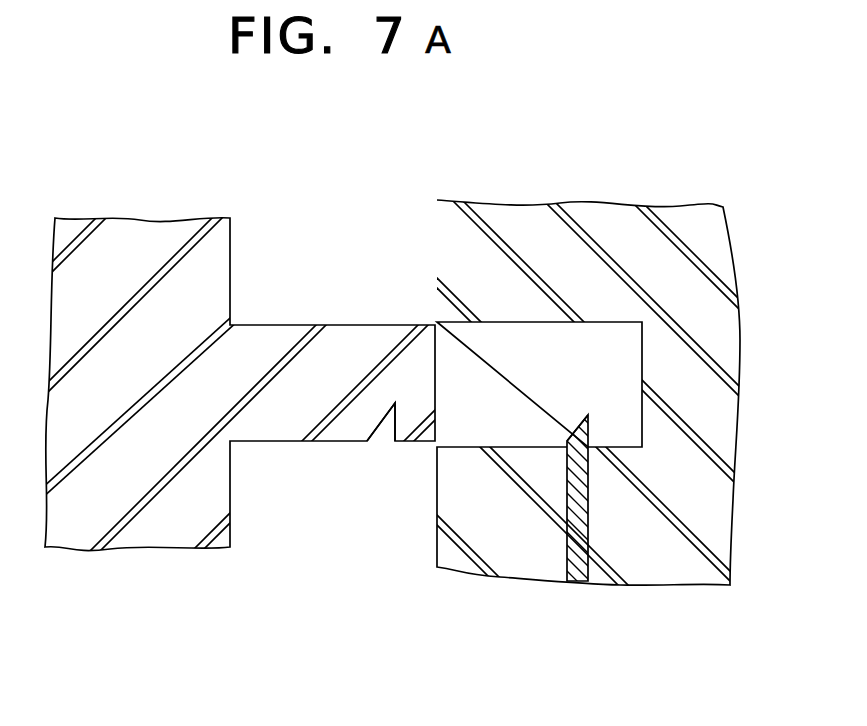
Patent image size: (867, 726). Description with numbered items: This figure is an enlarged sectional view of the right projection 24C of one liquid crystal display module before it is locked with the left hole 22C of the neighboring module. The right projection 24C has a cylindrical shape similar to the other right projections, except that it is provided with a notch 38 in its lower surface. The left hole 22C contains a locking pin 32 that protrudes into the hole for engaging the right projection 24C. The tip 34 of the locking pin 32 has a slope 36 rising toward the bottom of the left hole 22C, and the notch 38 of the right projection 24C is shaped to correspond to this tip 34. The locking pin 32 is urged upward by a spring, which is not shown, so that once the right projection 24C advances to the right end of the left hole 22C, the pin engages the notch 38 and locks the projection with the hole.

The left hole 22C is at (625, 342).
The right projection 24C is at (323, 363).
The locking pin 32 is at (573, 585).
The tip 34 is at (588, 426).
The slope 36 is at (575, 432).
The notch 38 is at (383, 433).